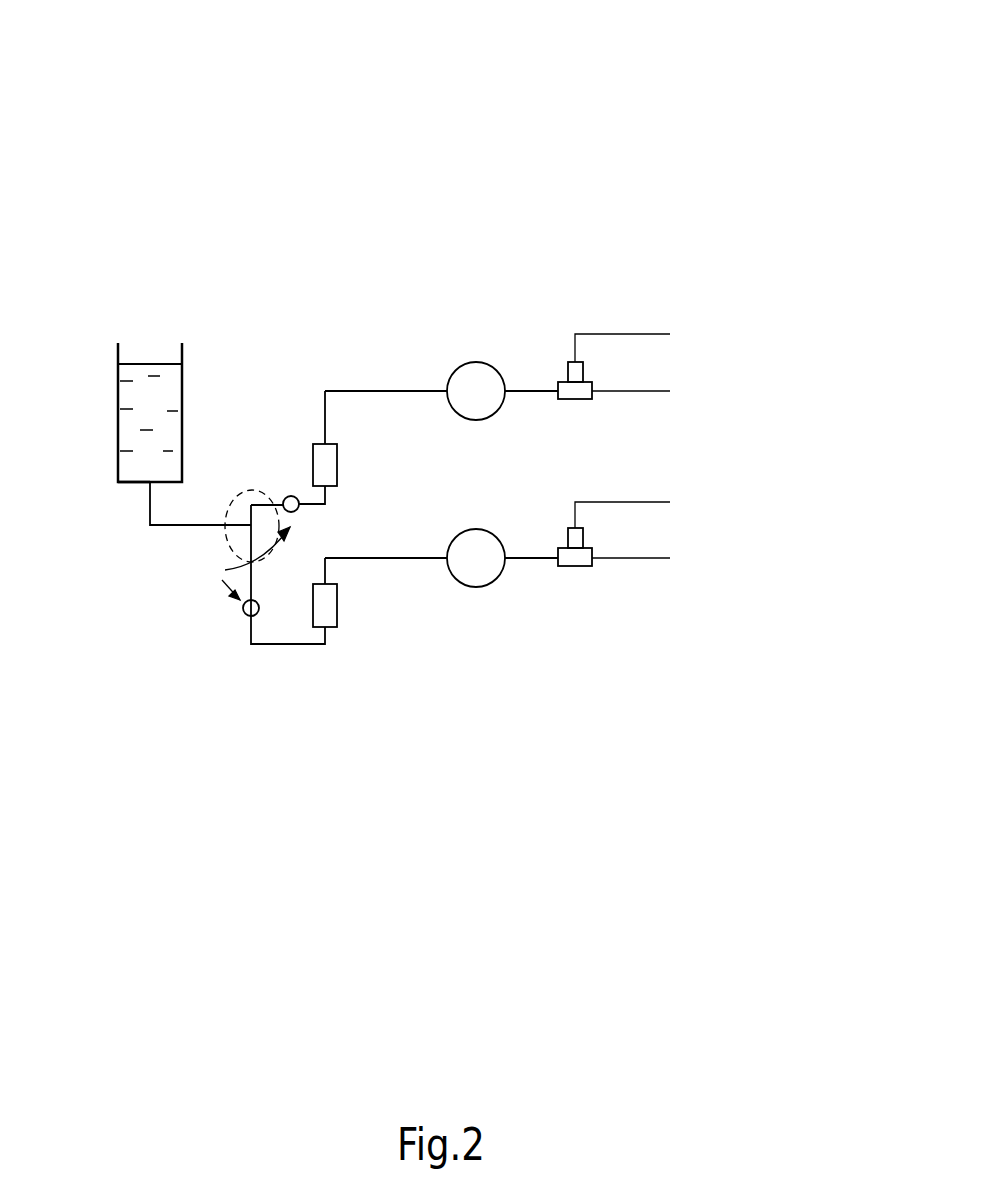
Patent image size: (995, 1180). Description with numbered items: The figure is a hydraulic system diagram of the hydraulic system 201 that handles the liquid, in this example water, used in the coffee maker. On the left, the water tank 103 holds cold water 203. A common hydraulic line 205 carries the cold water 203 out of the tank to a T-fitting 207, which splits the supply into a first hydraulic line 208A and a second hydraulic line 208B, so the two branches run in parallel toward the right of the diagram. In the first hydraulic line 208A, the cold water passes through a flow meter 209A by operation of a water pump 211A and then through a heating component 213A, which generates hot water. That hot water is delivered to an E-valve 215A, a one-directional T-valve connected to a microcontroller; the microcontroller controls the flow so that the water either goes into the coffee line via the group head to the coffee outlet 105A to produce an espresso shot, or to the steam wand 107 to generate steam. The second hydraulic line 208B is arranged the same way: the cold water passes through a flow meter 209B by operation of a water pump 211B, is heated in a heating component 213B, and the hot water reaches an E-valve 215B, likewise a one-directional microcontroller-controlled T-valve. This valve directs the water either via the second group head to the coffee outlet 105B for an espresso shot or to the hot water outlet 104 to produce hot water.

The hydraulic system 201 is at (742, 48).
The water tank 103 is at (161, 349).
The cold water 203 is at (95, 500).
The common hydraulic line 205 is at (174, 563).
The T-fitting 207 is at (291, 651).
The flow meter 209A is at (206, 665).
The flow meter 209B is at (272, 425).
The water pump 211A is at (368, 644).
The water pump 211B is at (396, 354).
The first hydraulic line 208A is at (386, 504).
The second hydraulic line 208B is at (433, 441).
The heating component 213A is at (502, 630).
The heating component 213B is at (523, 321).
The E-valve 215A is at (593, 629).
The E-valve 215B is at (650, 292).
The hot water outlet 104 is at (706, 337).
The coffee outlet 105B is at (725, 388).
The steam wand 107 is at (691, 504).
The coffee outlet 105A is at (723, 558).